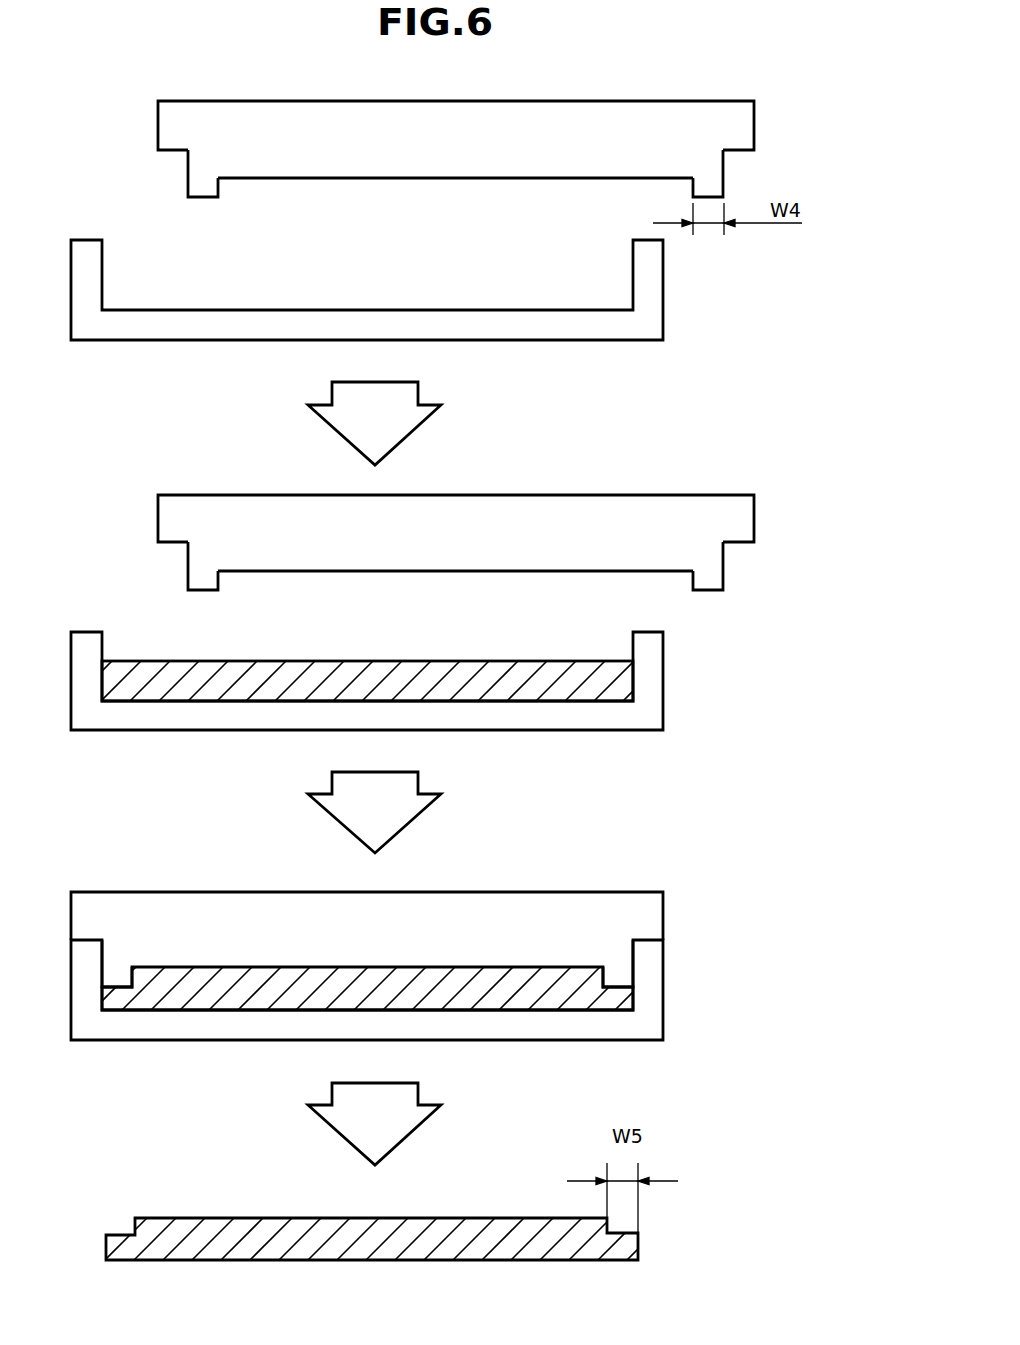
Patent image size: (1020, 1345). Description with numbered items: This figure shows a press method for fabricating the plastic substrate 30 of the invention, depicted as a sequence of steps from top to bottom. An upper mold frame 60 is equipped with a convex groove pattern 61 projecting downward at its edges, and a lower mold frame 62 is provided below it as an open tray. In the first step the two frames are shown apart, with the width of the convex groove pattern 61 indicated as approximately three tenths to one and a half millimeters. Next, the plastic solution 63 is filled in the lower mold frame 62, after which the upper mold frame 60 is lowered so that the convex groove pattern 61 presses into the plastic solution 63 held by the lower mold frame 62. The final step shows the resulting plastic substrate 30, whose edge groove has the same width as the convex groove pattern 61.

The upper mold frame 60 is at (740, 127).
The convex groove pattern 61 is at (715, 187).
The lower mold frame 62 is at (650, 297).
The plastic solution 63 is at (630, 678).
The plastic substrate 30 is at (632, 1247).